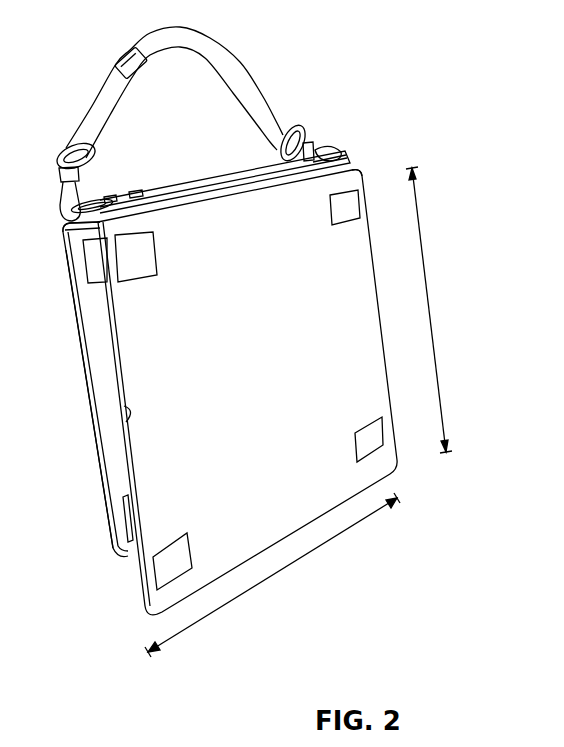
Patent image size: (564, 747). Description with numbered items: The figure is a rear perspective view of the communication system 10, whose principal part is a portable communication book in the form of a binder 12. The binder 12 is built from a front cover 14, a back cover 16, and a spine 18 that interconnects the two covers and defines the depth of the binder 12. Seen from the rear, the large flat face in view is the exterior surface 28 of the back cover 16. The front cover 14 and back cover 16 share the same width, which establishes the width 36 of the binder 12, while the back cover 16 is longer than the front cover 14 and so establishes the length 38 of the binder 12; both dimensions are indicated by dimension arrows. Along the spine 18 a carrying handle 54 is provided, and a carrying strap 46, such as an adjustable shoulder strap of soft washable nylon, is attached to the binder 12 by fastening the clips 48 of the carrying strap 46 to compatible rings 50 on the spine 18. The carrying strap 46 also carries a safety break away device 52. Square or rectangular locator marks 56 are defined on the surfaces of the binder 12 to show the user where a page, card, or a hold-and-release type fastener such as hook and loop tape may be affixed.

The communication system 10 is at (322, 50).
The binder 12 is at (67, 270).
The front cover 14 is at (80, 354).
The back cover 16 is at (127, 415).
The spine 18 is at (73, 232).
The exterior surface 28 is at (263, 366).
The width 36 is at (268, 578).
The length 38 is at (430, 292).
The carrying strap 46 is at (93, 103).
The clips 48 is at (60, 206).
The rings 50 is at (90, 200).
The safety break away device 52 is at (120, 55).
The carrying handle 54 is at (183, 180).
The locator marks 56 is at (140, 283).